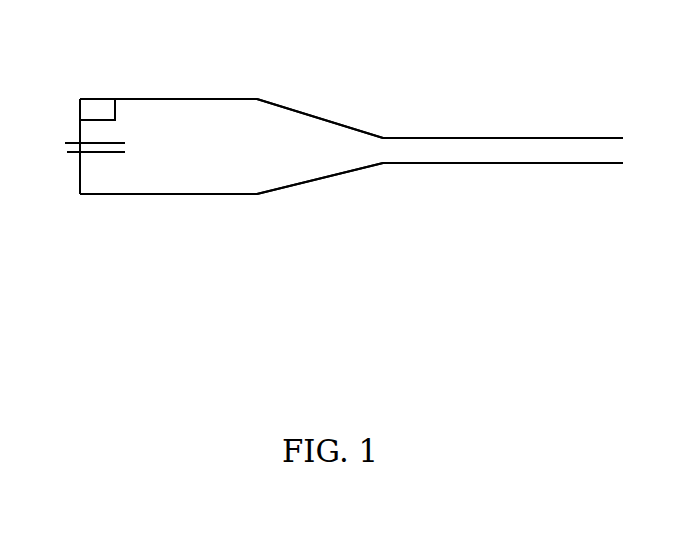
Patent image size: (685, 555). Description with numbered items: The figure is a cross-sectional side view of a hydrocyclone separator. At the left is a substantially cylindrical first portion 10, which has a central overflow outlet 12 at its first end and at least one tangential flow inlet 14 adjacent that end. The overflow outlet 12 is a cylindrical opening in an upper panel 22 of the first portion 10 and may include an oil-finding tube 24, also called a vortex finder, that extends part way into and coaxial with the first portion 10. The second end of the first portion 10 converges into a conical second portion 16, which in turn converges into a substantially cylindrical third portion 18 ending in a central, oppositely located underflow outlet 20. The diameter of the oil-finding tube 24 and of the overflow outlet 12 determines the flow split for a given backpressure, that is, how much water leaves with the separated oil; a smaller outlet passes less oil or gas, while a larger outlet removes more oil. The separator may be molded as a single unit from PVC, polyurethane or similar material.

The cylindrical first portion 10 is at (178, 99).
The central overflow outlet 12 is at (67, 152).
The tangential flow inlet 14 is at (97, 99).
The conical second portion 16 is at (301, 113).
The cylindrical third portion 18 is at (474, 138).
The underflow outlet 20 is at (587, 138).
The upper panel 22 is at (79, 132).
The oil-finding tube (vortex finder) 24 is at (107, 143).